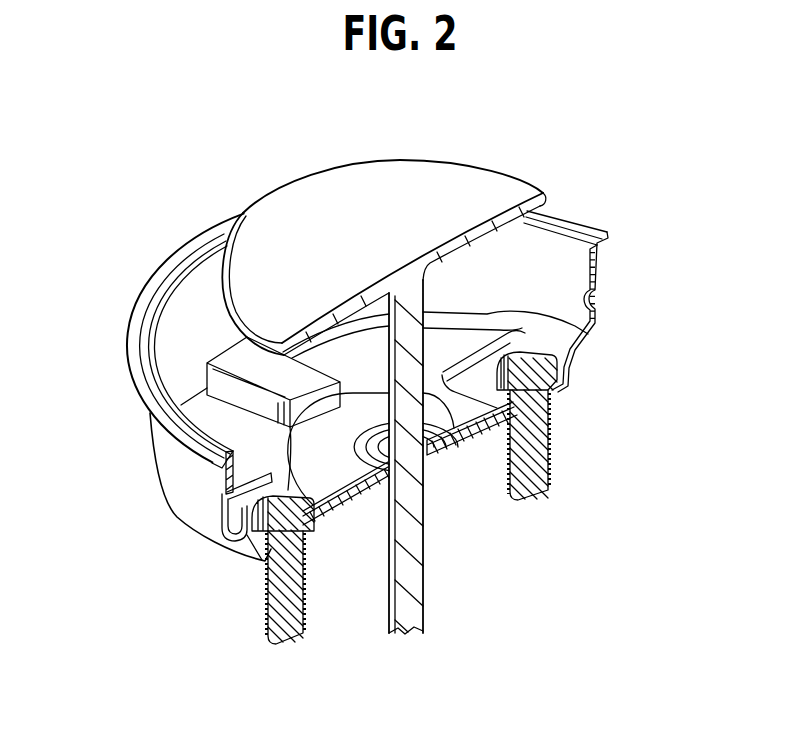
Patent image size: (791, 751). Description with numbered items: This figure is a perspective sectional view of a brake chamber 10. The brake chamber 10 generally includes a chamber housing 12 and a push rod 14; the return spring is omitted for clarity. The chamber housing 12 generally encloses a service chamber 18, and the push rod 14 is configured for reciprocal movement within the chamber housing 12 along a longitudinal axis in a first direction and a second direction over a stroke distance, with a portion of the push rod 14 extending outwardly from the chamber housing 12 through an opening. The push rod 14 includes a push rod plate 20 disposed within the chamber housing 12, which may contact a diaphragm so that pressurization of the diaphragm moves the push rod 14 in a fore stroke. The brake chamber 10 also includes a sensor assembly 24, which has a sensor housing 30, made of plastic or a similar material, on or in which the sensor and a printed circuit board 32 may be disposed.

The brake chamber 10 is at (149, 206).
The chamber housing 12 is at (183, 494).
The push rod 14 is at (413, 593).
The service chamber 18 is at (190, 340).
The push rod plate 20 is at (402, 183).
The sensor assembly 24 is at (335, 486).
The sensor housing 30 is at (462, 413).
The printed circuit board 32 is at (441, 452).